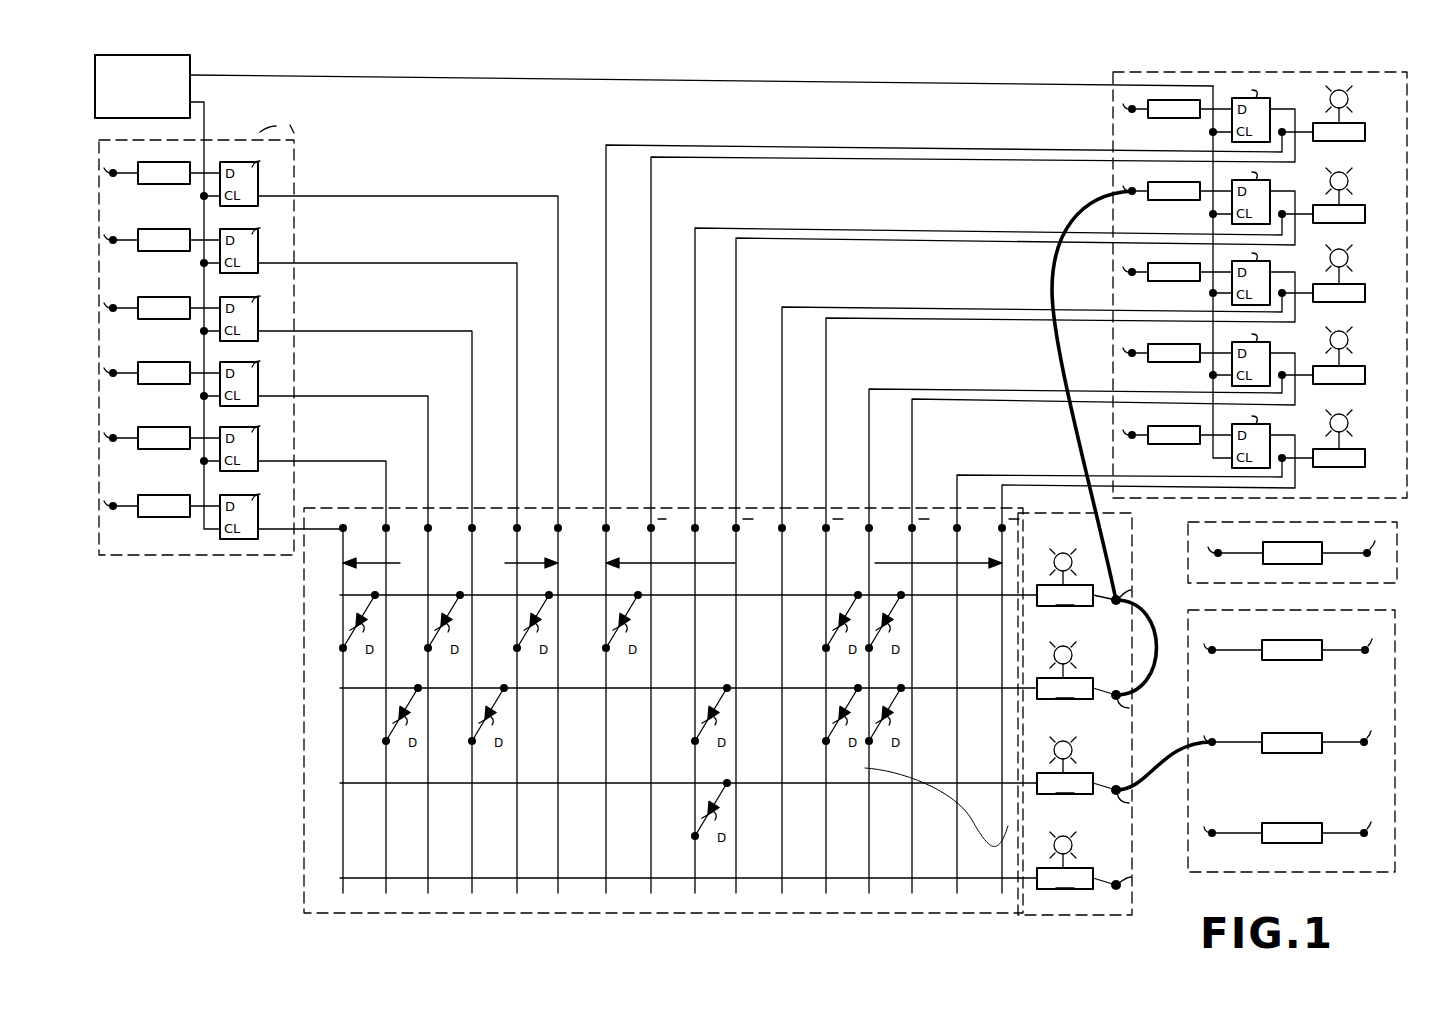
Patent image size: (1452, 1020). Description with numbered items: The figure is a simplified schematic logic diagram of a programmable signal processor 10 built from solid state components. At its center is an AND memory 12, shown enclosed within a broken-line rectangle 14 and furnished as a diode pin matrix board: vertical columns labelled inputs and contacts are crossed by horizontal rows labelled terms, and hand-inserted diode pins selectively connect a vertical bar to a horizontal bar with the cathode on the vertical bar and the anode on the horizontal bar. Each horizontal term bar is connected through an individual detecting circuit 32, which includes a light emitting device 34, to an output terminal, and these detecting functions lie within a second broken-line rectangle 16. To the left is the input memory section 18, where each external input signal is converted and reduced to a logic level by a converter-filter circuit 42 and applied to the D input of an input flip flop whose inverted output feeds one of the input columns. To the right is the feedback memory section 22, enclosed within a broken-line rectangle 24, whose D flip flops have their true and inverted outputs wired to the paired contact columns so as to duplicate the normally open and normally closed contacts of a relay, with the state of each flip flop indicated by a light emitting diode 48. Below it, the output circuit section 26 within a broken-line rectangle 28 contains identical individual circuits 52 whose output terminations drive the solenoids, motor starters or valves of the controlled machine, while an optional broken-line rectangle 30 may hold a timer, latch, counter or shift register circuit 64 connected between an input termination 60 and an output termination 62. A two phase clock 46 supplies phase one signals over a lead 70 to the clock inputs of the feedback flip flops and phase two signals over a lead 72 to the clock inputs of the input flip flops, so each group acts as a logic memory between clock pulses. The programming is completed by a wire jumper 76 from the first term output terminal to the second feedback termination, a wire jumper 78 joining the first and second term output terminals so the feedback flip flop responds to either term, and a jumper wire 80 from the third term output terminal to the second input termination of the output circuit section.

The programmable signal processor 10 is at (757, 489).
The AND memory 12 is at (632, 753).
The broken-line rectangle 14 is at (548, 916).
The broken-line rectangle 16 is at (1100, 914).
The input memory section 18 is at (170, 348).
The feedback memory section 22 is at (1180, 228).
The broken-line rectangle 24 is at (1224, 70).
The output circuit section 26 is at (1284, 732).
The broken-line rectangle 28 is at (1400, 781).
The broken-line rectangle 30 is at (1404, 561).
The detecting circuit 32 is at (1065, 737).
The light emitting device 34 is at (1073, 565).
The converter-filter circuit 42 is at (164, 339).
The two phase clock 46 is at (172, 54).
The light emitting diode 48 is at (1349, 98).
The individual circuit 52 is at (1278, 642).
The input termination 60 is at (1209, 546).
The output termination 62 is at (1374, 546).
The circuits 64 is at (1292, 553).
The lead 70 is at (877, 84).
The lead 72 is at (204, 120).
The wire jumper 76 is at (1048, 292).
The wire jumper 78 is at (1154, 648).
The jumper wire 80 is at (1156, 763).